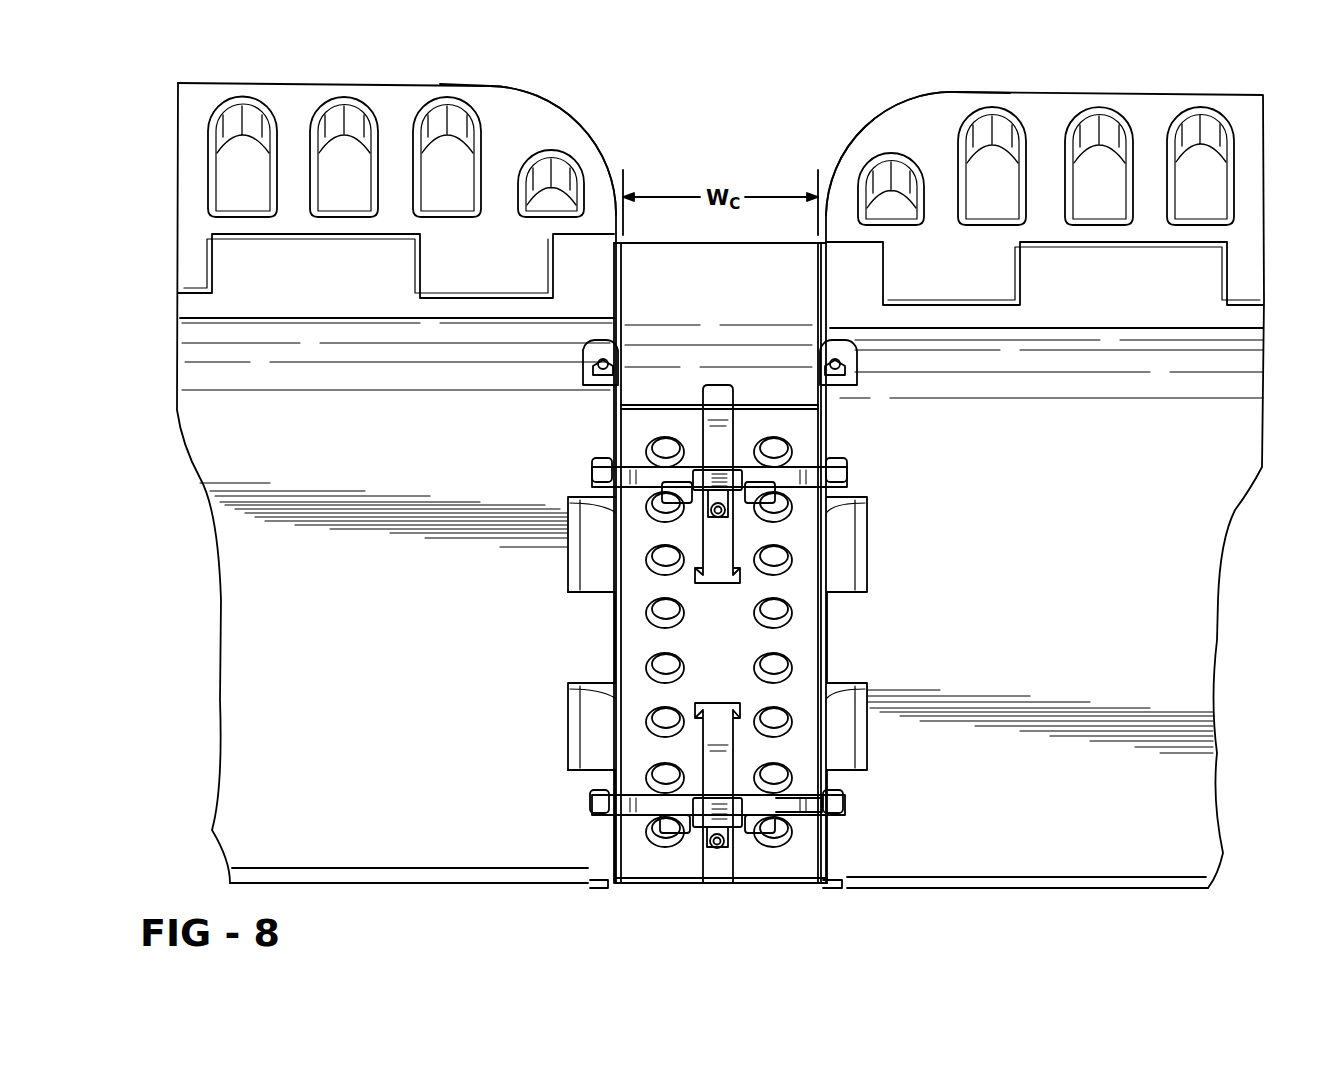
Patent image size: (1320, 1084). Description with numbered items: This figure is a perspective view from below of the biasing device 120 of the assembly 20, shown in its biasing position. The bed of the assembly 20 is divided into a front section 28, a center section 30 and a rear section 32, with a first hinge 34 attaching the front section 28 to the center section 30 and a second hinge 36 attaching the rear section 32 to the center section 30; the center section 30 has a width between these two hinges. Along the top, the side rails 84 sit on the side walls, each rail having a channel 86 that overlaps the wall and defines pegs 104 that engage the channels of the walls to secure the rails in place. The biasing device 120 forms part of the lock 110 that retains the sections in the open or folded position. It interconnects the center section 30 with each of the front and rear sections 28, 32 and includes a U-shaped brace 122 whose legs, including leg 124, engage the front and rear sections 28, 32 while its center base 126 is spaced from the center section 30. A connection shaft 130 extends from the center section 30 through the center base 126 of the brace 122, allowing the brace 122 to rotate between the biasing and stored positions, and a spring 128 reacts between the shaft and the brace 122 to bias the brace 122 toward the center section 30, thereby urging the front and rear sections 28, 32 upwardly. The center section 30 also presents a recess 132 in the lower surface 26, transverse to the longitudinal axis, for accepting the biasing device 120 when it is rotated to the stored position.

The assembly 20 is at (150, 184).
The lower surface 26 is at (267, 403).
The front section 28 is at (397, 845).
The center section 30 is at (623, 893).
The rear section 32 is at (1182, 860).
The first hinge 34 is at (585, 593).
The second hinge 36 is at (850, 557).
The side rails 84 is at (883, 130).
The channel 86 is at (207, 253).
The peg 104 is at (1248, 272).
The lock 110 is at (562, 500).
The biasing device 120 is at (852, 476).
The brace 122 is at (792, 812).
The leg 124 is at (815, 830).
The center base 126 is at (677, 829).
The spring 128 is at (734, 822).
The connection shaft 130 is at (716, 849).
The recess 132 is at (581, 778).